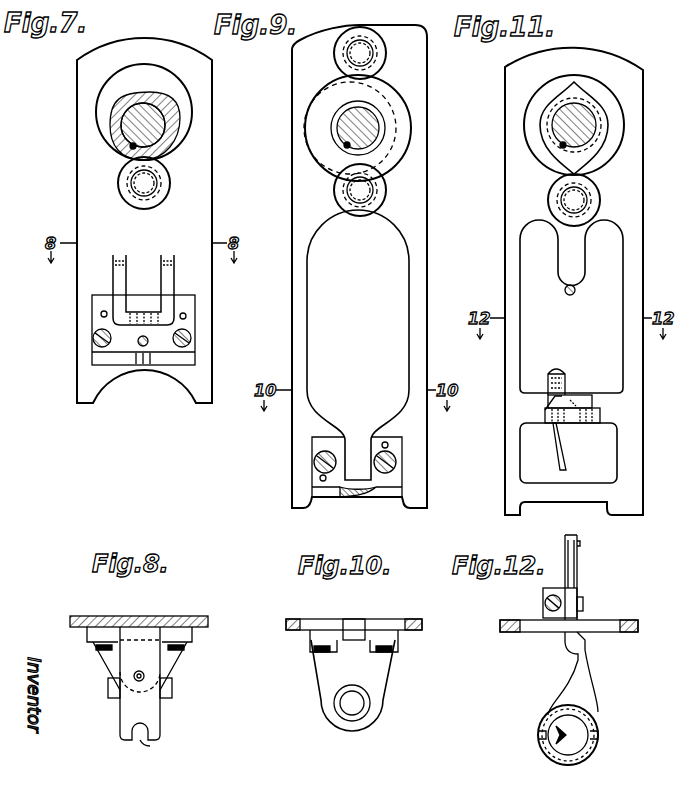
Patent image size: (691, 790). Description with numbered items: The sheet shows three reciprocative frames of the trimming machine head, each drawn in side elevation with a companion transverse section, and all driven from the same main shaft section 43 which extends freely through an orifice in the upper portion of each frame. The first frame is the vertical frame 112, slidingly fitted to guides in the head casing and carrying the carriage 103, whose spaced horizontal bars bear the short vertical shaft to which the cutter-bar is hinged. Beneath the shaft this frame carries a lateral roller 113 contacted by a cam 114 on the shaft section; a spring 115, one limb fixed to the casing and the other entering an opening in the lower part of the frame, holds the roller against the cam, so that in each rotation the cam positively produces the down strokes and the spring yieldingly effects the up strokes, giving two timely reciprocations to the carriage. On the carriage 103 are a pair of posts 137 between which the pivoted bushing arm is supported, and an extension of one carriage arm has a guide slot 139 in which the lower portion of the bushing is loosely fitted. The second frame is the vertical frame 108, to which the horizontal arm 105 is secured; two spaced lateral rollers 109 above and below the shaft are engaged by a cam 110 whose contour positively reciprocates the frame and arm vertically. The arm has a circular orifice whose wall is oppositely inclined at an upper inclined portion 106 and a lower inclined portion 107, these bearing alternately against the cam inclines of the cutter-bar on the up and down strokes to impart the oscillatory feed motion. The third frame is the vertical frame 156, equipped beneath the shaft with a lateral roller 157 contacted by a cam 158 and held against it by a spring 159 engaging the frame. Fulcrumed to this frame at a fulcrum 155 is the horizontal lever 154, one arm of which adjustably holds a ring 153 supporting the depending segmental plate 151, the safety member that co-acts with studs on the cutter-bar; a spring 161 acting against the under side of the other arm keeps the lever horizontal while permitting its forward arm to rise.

In FIG. 7, the shaft section 43 is at (130, 117).
In FIG. 9, the shaft section 43 is at (350, 129).
In FIG. 11, the shaft section 43 is at (555, 123).
In FIG. 7, the cam 114 is at (110, 128).
In FIG. 7, the lateral roller 113 is at (118, 183).
In FIG. 7, the vertical frame 112 is at (77, 212).
In FIG. 8, the vertical frame 112 is at (202, 630).
In FIG. 7, the posts 137 is at (165, 272).
In FIG. 8, the posts 137 is at (108, 689).
In FIG. 7, the carriage 103 is at (118, 357).
In FIG. 8, the carriage 103 is at (160, 705).
In FIG. 7, the spring 115 is at (148, 345).
In FIG. 8, the guide slot 139 is at (150, 746).
In FIG. 9, the lateral rollers 109 is at (334, 56).
In FIG. 9, the cam 110 is at (312, 150).
In FIG. 9, the vertical frame 108 is at (409, 286).
In FIG. 10, the vertical frame 108 is at (298, 631).
In FIG. 9, the upper inclined portion 106 is at (340, 483).
In FIG. 10, the upper inclined portion 106 is at (343, 716).
In FIG. 9, the horizontal arm 105 is at (330, 490).
In FIG. 10, the horizontal arm 105 is at (385, 680).
In FIG. 9, the lower inclined portion 107 is at (365, 496).
In FIG. 11, the cam 158 is at (565, 163).
In FIG. 11, the lateral roller 157 is at (548, 200).
In FIG. 11, the vertical frame 156 is at (505, 262).
In FIG. 12, the vertical frame 156 is at (510, 633).
In FIG. 11, the spring 159 is at (575, 293).
In FIG. 11, the fulcrum 155 is at (582, 398).
In FIG. 12, the fulcrum 155 is at (583, 606).
In FIG. 11, the ring 153 is at (600, 410).
In FIG. 12, the ring 153 is at (582, 710).
In FIG. 11, the horizontal lever 154 is at (600, 420).
In FIG. 12, the horizontal lever 154 is at (567, 682).
In FIG. 11, the segmental plate 151 is at (553, 455).
In FIG. 12, the segmental plate 151 is at (566, 735).
In FIG. 12, the spring 161 is at (563, 578).